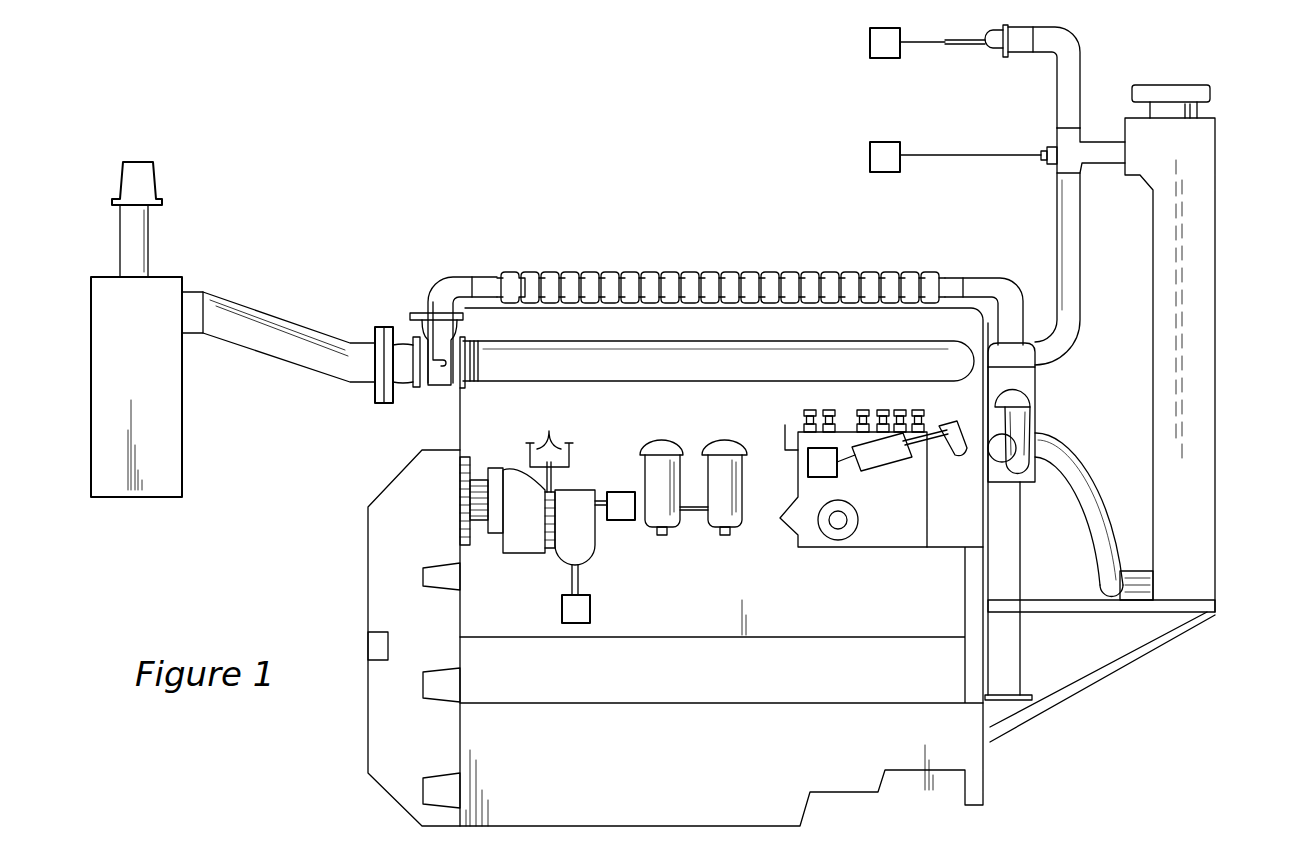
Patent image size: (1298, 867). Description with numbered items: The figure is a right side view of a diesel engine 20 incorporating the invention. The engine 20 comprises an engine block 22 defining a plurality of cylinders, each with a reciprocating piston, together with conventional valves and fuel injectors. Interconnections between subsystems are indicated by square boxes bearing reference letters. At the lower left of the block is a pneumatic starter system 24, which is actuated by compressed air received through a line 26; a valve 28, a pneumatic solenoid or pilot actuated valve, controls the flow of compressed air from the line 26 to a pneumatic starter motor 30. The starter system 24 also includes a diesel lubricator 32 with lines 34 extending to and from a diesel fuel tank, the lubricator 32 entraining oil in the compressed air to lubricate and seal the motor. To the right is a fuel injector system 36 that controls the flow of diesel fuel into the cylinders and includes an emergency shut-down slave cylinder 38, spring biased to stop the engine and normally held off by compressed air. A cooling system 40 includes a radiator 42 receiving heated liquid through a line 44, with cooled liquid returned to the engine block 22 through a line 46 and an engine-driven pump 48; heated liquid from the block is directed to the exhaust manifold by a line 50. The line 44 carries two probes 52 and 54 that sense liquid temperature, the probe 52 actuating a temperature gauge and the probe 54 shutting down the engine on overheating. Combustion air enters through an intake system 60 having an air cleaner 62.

The diesel engine 20 is at (416, 274).
The engine block 22 is at (700, 593).
The pneumatic starter system 24 is at (478, 493).
The line 26 is at (603, 512).
The valve 28 is at (580, 552).
The pneumatic starter motor 30 is at (527, 538).
The diesel lubricator 32 is at (553, 484).
The lines 34 is at (548, 440).
The fuel injector system 36 is at (893, 517).
The emergency shut-down slave cylinder 38 is at (885, 447).
The cooling system 40 is at (1141, 413).
The radiator 42 is at (1200, 477).
The line 44 is at (1070, 328).
The line 46 is at (1076, 483).
The pump 48 is at (1025, 382).
The line 50 is at (567, 280).
The probe 52 is at (1042, 152).
The probe 54 is at (968, 46).
The intake system 60 is at (278, 306).
The air cleaner 62 is at (105, 402).